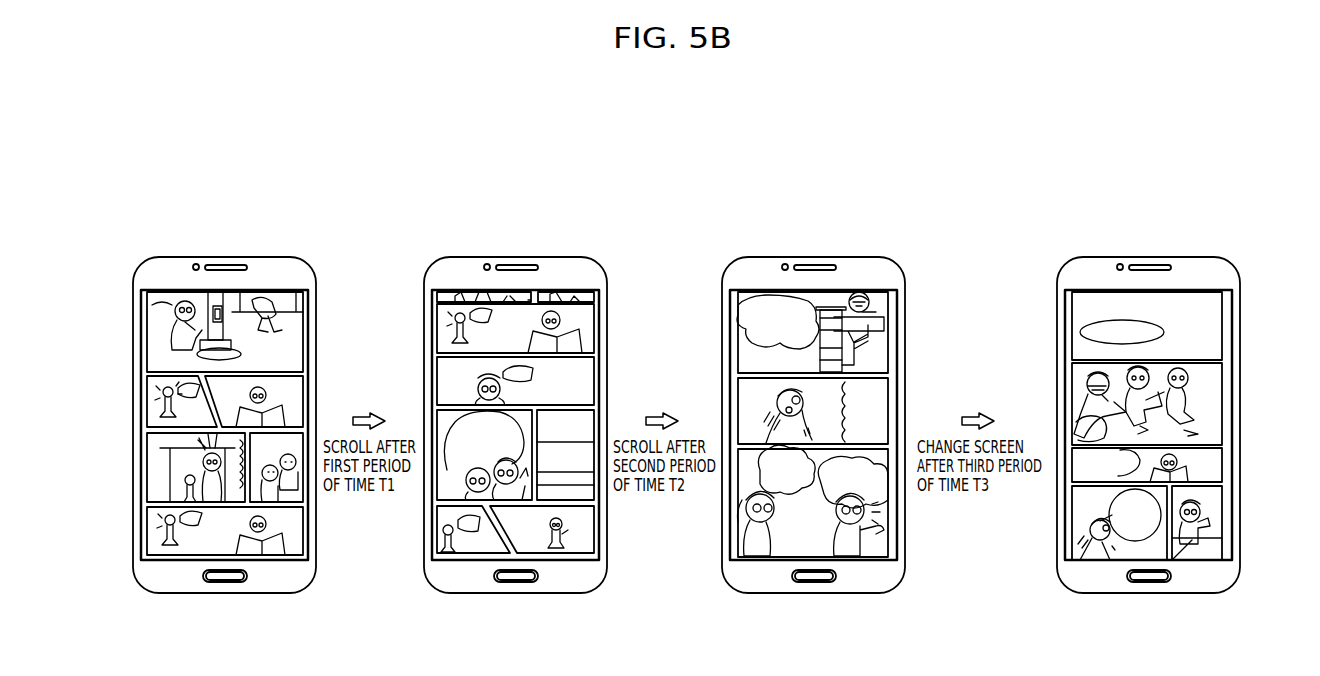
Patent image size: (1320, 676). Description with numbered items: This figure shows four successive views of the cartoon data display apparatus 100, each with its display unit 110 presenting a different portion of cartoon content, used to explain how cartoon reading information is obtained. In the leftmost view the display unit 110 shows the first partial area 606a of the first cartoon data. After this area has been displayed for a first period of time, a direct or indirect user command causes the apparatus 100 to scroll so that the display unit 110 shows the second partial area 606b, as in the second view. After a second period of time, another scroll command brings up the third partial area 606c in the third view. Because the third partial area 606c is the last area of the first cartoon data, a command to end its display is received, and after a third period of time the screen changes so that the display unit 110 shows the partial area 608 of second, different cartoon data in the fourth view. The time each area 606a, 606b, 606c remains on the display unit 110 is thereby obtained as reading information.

The cartoon data display apparatus 100 is at (265, 256).
The display unit 110 is at (264, 290).
The first partial area 606a is at (308, 341).
The second partial area 606b is at (599, 341).
The third partial area 606c is at (888, 341).
The partial area of second cartoon data 608 is at (1223, 341).